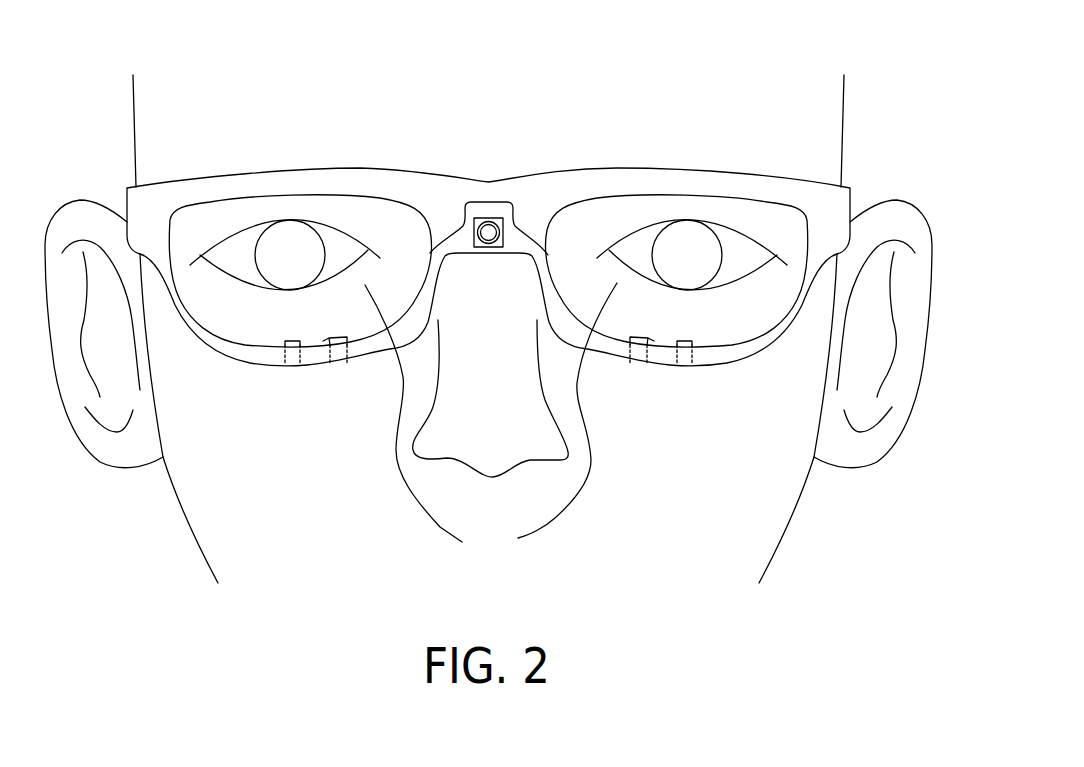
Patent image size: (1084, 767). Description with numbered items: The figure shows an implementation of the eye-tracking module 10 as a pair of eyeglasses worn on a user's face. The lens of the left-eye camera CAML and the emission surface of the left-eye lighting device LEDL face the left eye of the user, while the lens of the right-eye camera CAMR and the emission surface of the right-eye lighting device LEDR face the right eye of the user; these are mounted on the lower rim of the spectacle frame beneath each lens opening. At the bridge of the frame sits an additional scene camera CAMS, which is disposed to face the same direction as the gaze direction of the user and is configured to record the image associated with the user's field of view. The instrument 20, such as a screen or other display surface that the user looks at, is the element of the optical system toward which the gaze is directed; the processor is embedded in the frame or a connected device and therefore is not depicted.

The eye-tracking module 10 is at (738, 62).
The instrument 20 is at (488, 329).
The scene camera CAMS is at (488, 220).
The right-eye camera CAMR is at (323, 341).
The left-eye camera CAML is at (654, 341).
The right-eye lighting device LEDR is at (285, 341).
The left-eye lighting device LEDL is at (692, 341).